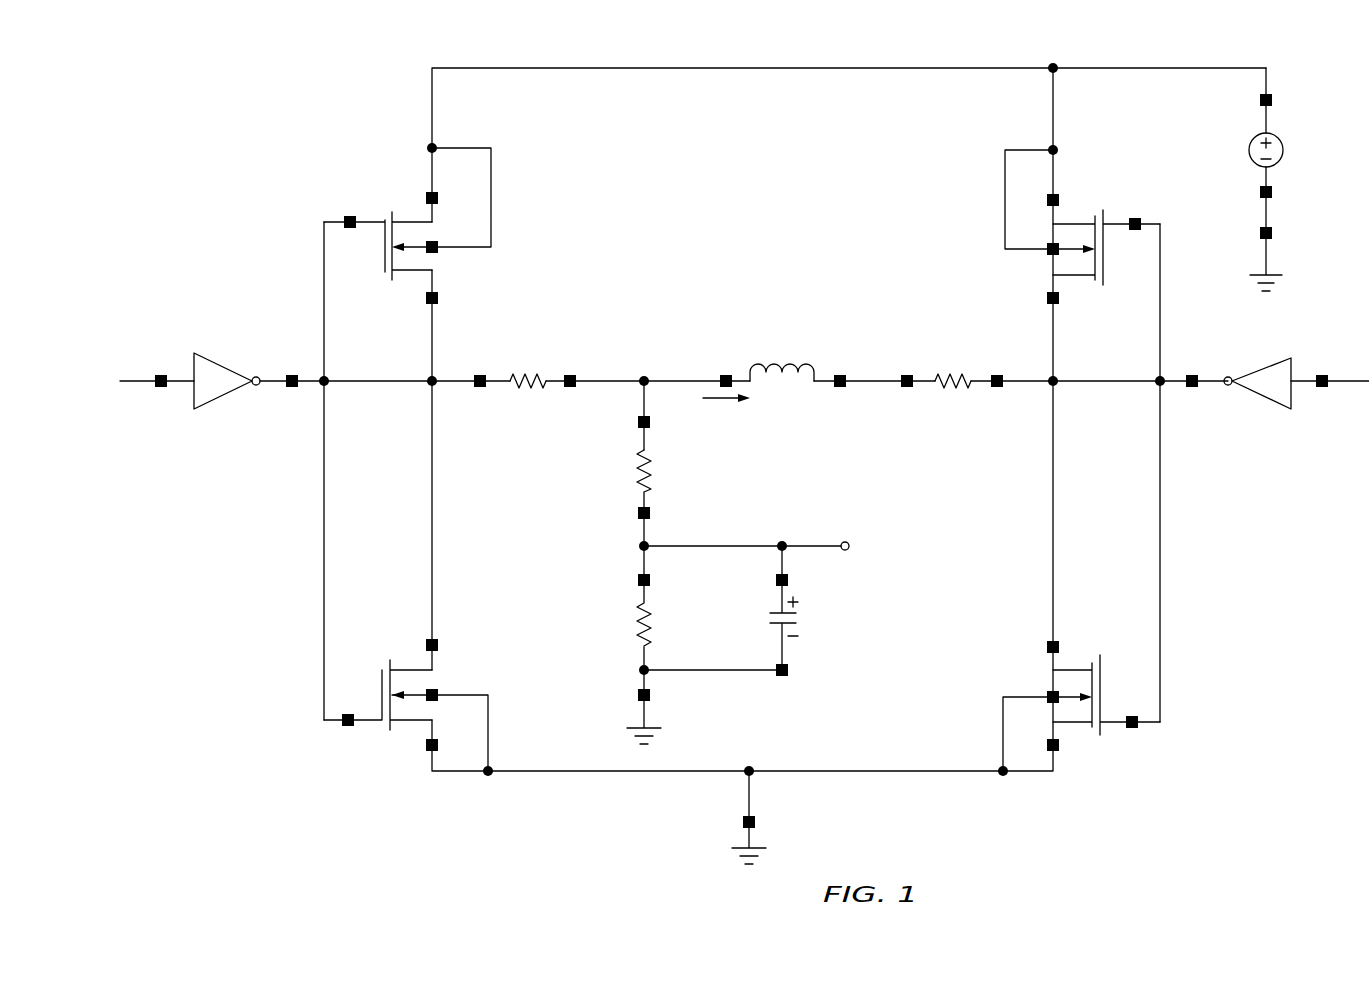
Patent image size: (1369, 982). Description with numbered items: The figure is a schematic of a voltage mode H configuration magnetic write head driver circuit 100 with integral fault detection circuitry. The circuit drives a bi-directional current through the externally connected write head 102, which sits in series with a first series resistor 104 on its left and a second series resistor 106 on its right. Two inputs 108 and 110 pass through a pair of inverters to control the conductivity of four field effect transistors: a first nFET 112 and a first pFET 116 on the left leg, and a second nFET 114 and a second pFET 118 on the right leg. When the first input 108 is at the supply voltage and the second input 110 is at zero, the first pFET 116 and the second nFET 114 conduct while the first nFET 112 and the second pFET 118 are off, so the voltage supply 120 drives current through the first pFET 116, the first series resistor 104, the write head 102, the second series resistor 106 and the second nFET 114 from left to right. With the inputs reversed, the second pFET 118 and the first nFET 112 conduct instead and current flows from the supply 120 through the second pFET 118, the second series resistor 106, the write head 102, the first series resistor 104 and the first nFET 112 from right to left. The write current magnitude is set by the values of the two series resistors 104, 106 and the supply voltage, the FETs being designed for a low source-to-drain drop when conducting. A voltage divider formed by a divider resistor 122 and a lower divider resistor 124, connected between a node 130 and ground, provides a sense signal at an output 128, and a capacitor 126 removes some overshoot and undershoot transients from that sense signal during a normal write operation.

The H configuration write driver circuit 100 is at (744, 463).
The write head 102 is at (784, 363).
The series resistor R1 104 is at (531, 390).
The series resistor R3 106 is at (957, 391).
The input 108 is at (182, 380).
The input 110 is at (1305, 380).
The nFET M1 112 is at (382, 728).
The nFET M2 114 is at (1097, 728).
The pFET M3 116 is at (391, 216).
The pFET M4 118 is at (1103, 216).
The voltage supply 120 is at (1283, 150).
The resistor R0 122 is at (636, 471).
The resistor R2 124 is at (636, 629).
The capacitor C1 126 is at (804, 619).
The output 128 is at (848, 541).
The node 130 is at (645, 375).